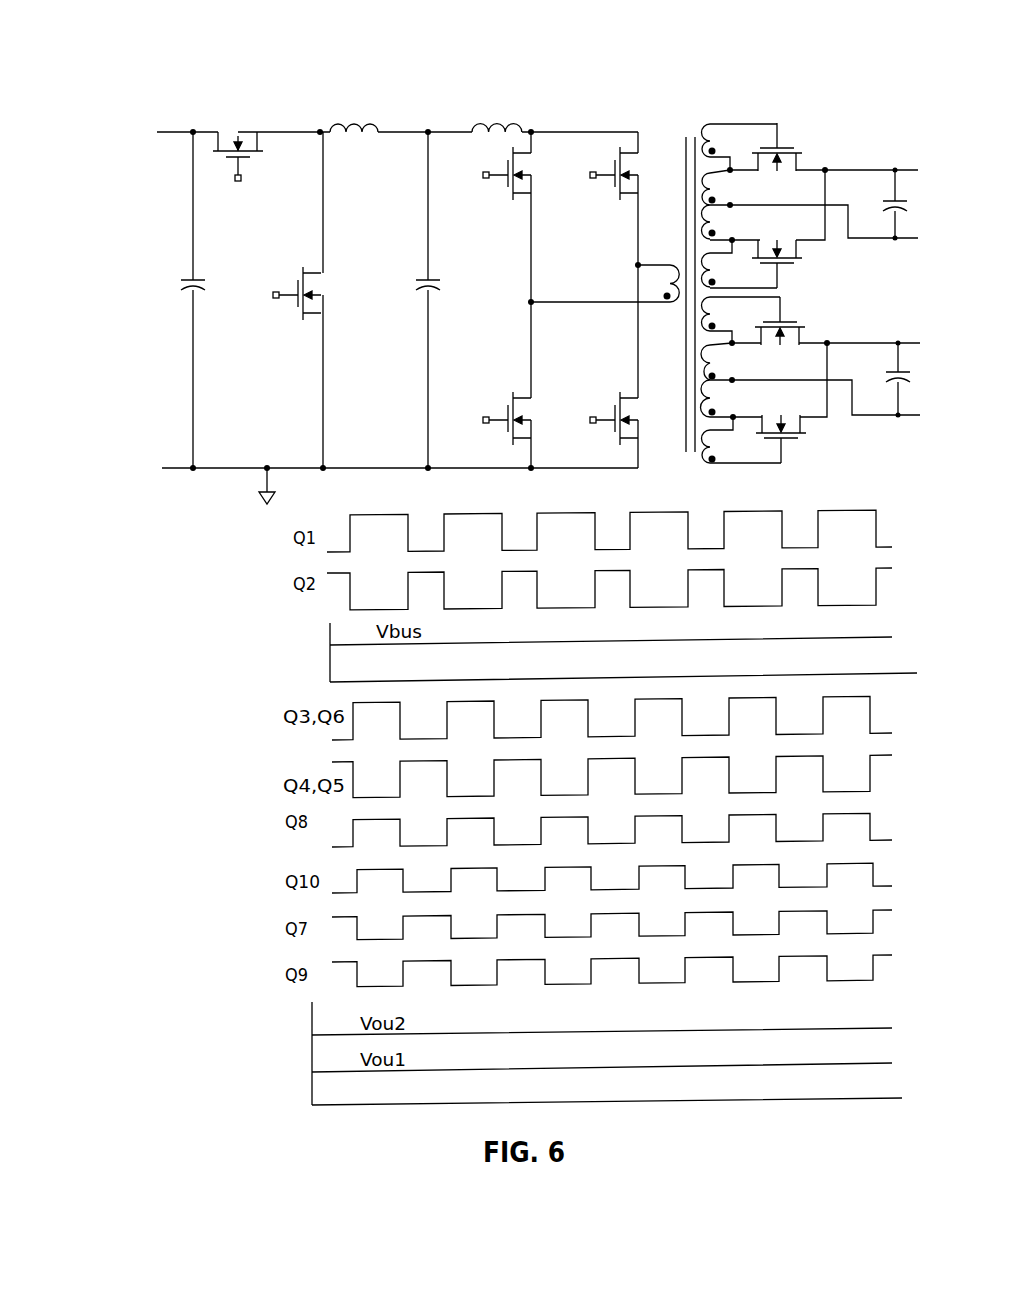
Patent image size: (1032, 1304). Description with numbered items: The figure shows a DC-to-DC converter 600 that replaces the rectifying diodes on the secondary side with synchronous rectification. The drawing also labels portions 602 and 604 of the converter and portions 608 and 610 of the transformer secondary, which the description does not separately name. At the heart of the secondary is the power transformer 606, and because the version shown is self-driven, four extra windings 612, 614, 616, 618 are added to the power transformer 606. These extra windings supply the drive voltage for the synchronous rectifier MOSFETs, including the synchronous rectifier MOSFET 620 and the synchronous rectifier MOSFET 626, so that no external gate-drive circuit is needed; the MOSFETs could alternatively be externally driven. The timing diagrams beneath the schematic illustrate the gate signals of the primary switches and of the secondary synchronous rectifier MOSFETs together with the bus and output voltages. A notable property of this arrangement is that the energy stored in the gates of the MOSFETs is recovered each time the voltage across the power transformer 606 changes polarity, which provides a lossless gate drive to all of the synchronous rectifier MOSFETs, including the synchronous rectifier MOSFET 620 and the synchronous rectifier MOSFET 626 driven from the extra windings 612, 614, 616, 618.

The DC-to-DC converter 600 is at (137, 75).
The buck pre-regulator stage 602 is at (160, 100).
The full-bridge inverter stage 604 is at (630, 82).
The power transformer 606 is at (700, 87).
The first secondary winding Ns1 608 is at (720, 216).
The second secondary winding Ns2 610 is at (724, 397).
The extra winding 612 is at (728, 122).
The extra winding 614 is at (756, 458).
The extra winding 616 is at (748, 278).
The extra winding 618 is at (745, 302).
The synchronous rectifier MOSFET 620 is at (812, 135).
The synchronous rectifier MOSFET 626 is at (822, 440).